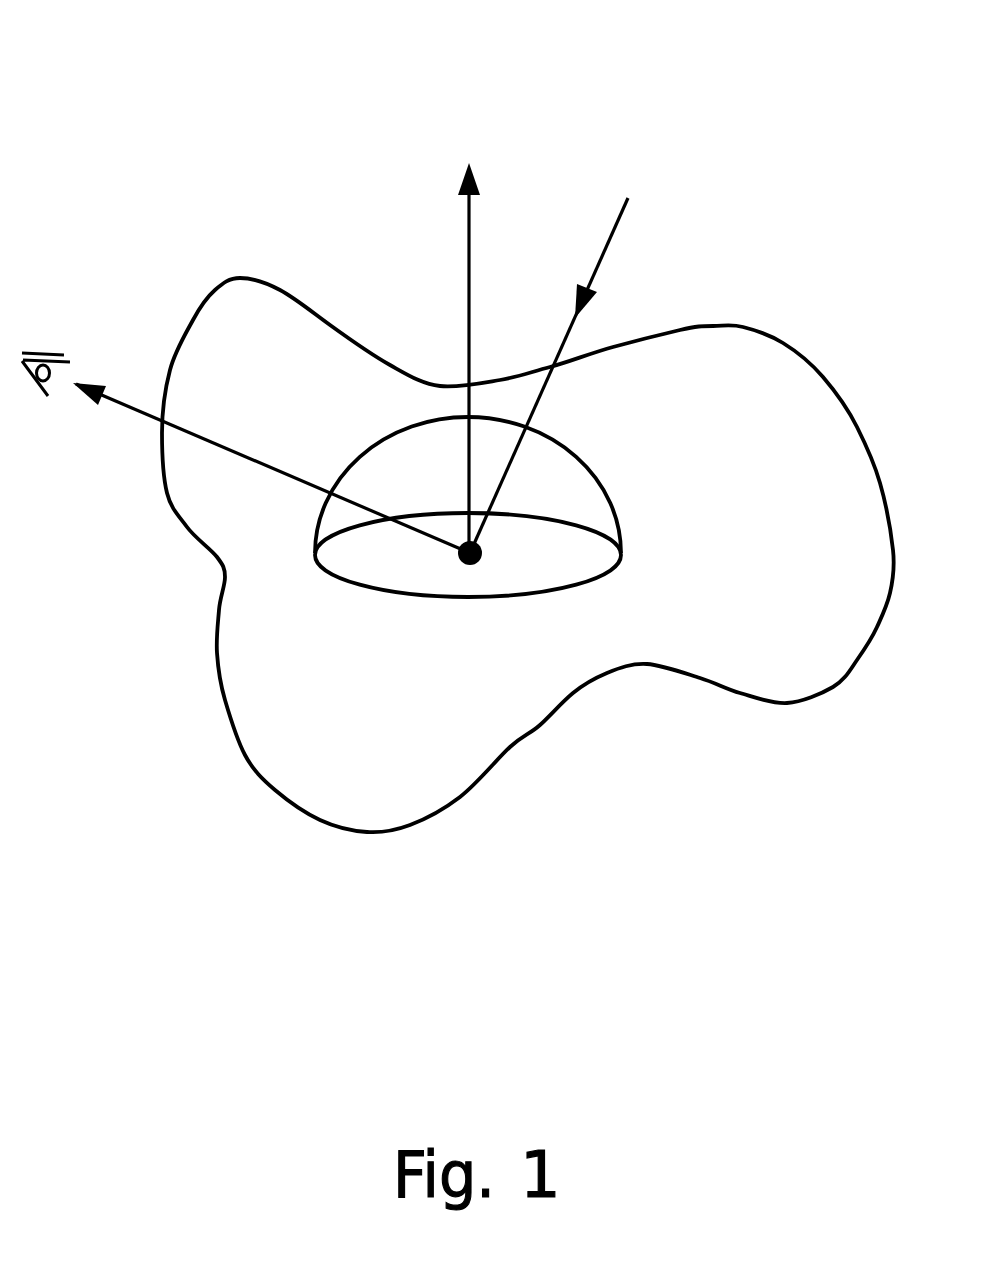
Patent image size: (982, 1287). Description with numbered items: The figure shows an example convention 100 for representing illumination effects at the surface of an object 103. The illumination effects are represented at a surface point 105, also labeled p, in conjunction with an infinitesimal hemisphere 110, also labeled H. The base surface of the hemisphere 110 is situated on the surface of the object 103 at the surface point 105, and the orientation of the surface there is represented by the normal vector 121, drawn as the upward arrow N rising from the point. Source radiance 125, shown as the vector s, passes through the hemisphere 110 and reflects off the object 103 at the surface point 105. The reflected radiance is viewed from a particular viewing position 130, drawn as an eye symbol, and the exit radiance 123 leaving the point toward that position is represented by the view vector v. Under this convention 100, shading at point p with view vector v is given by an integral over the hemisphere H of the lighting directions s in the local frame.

The convention 100 is at (200, 105).
The object 103 is at (743, 328).
The surface point 105 is at (470, 565).
The hemisphere 110 is at (593, 477).
The normal vector 121 is at (469, 267).
The exit radiance 123 is at (252, 457).
The source radiance 125 is at (600, 260).
The viewing position 130 is at (50, 352).